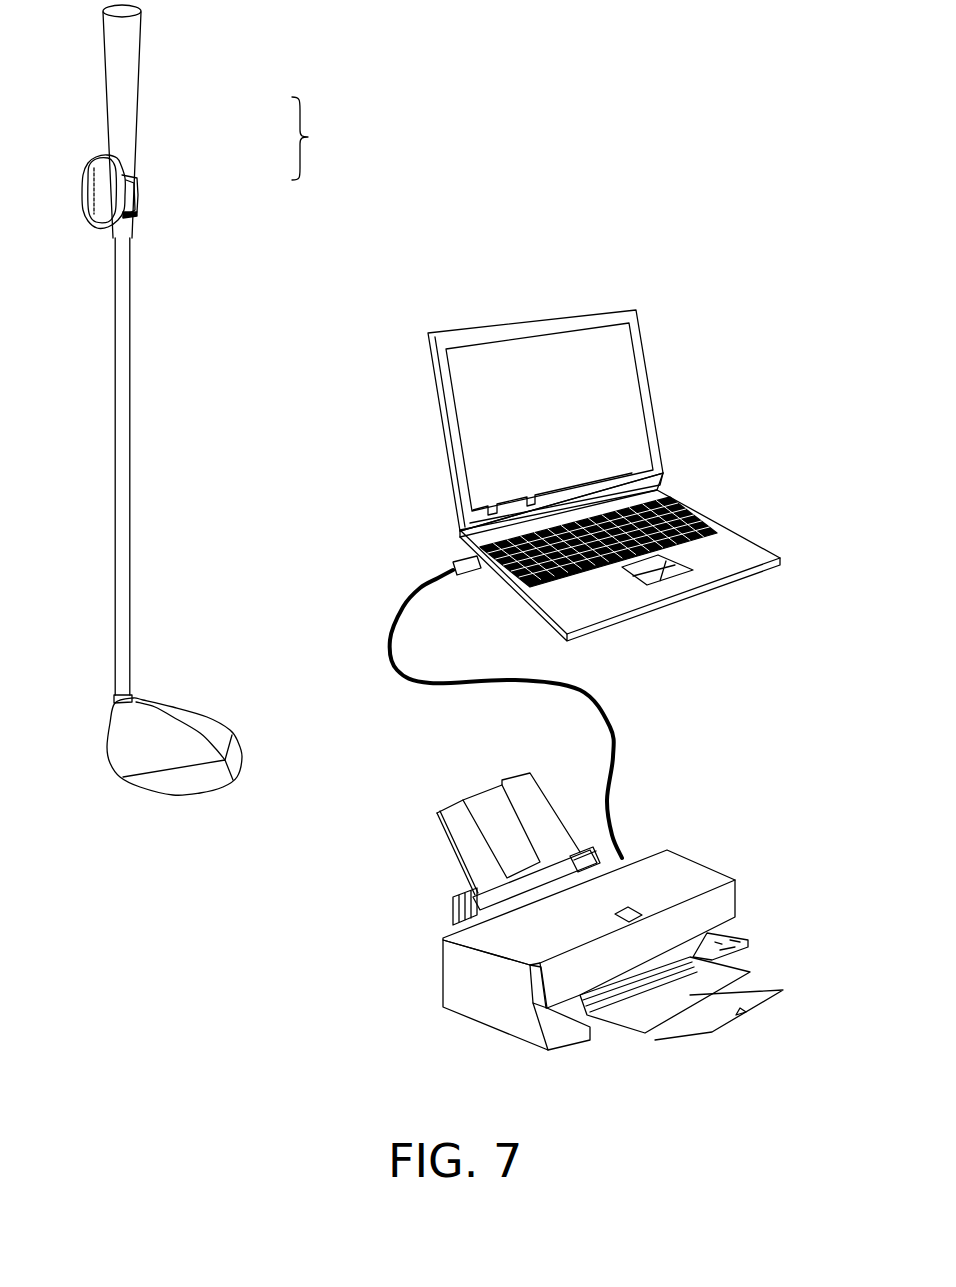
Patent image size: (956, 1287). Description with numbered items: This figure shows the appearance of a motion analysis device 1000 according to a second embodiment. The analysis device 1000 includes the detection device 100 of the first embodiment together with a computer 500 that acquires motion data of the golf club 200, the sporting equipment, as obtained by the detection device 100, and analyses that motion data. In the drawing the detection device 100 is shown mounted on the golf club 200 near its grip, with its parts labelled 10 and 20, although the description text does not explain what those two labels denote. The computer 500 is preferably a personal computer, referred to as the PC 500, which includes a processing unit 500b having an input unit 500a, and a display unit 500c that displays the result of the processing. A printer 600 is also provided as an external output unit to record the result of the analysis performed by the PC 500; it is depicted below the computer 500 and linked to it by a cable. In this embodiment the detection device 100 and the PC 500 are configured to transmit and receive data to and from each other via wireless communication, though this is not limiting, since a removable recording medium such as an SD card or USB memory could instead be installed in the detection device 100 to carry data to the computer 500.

The sensor module 10 is at (122, 163).
The clip attachment 20 is at (133, 197).
The detection device 100 is at (330, 138).
The golf club 200 is at (127, 467).
The computer 500 is at (605, 492).
The input unit 500a is at (630, 490).
The processing unit 500b is at (707, 555).
The display unit 500c is at (573, 382).
The printer 600 is at (673, 877).
The motion analysis device 1000 is at (448, 122).